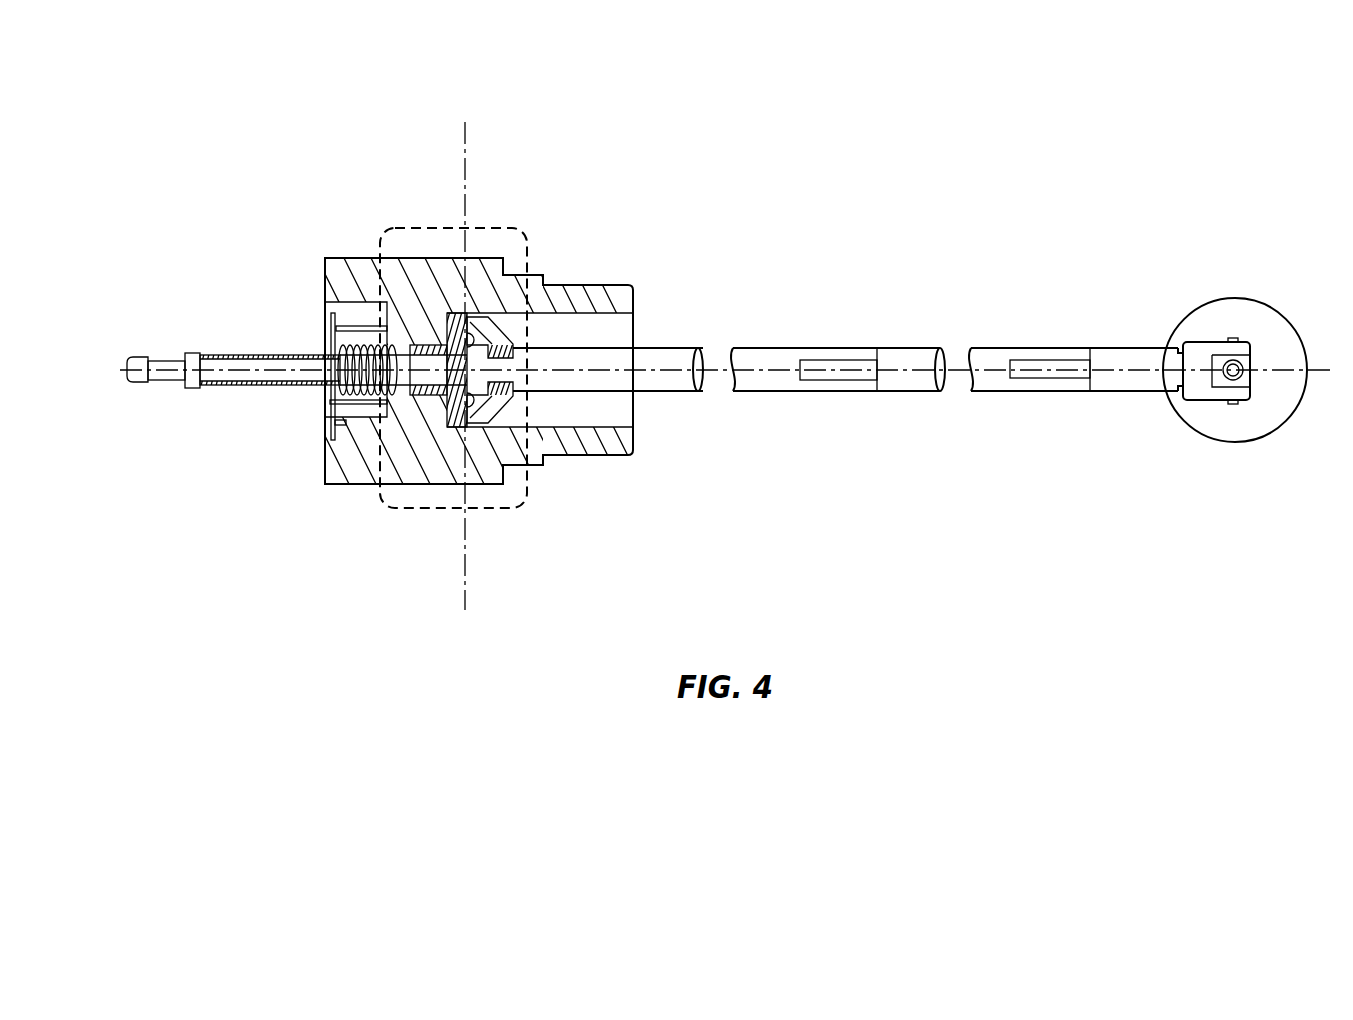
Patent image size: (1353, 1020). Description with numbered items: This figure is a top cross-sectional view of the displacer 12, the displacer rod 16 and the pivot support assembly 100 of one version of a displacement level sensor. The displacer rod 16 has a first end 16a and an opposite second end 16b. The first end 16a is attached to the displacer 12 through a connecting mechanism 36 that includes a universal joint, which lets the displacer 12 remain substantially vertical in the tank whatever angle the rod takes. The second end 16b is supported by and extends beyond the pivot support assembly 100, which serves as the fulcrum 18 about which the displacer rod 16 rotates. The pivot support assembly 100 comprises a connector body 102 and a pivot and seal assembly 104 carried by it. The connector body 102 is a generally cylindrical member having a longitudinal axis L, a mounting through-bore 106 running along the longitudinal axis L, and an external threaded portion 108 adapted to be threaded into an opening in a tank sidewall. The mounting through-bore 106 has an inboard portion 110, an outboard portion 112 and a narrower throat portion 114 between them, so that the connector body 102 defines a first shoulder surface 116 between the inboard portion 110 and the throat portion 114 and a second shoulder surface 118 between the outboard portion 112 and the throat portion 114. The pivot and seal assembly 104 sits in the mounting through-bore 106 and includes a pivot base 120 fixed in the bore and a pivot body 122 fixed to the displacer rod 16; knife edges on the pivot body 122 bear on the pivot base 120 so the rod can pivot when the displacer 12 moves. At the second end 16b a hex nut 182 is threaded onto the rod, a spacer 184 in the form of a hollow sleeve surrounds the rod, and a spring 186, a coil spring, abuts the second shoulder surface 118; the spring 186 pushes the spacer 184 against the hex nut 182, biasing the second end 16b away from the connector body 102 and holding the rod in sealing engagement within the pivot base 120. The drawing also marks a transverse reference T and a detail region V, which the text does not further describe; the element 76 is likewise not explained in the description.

The displacer 12 is at (1275, 307).
The displacer rod 16 is at (791, 340).
The first end 16a is at (1130, 347).
The second end 16b is at (140, 357).
The fulcrum 18 is at (439, 336).
The connecting mechanism 36 is at (1203, 340).
The collet 76 is at (505, 315).
The pivot support assembly 100 is at (533, 112).
The connector body 102 is at (338, 257).
The pivot and seal assembly 104 is at (504, 329).
The mounting through-bore 106 is at (613, 418).
The external threaded portion 108 is at (607, 457).
The inboard portion 110 is at (572, 421).
The outboard portion 112 is at (327, 403).
The throat portion 114 is at (432, 395).
The first shoulder surface 116 is at (462, 427).
The second shoulder surface 118 is at (403, 393).
The pivot base 120 is at (447, 313).
The pivot body 122 is at (523, 463).
The hex nut 182 is at (192, 353).
The spacer 184 is at (245, 355).
The spring 186 is at (337, 340).
The transverse axis T is at (465, 173).
The longitudinal axis L is at (713, 368).
The detail view region V is at (497, 228).